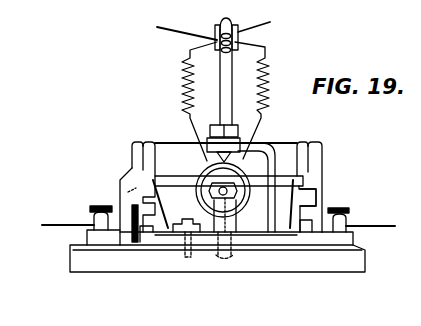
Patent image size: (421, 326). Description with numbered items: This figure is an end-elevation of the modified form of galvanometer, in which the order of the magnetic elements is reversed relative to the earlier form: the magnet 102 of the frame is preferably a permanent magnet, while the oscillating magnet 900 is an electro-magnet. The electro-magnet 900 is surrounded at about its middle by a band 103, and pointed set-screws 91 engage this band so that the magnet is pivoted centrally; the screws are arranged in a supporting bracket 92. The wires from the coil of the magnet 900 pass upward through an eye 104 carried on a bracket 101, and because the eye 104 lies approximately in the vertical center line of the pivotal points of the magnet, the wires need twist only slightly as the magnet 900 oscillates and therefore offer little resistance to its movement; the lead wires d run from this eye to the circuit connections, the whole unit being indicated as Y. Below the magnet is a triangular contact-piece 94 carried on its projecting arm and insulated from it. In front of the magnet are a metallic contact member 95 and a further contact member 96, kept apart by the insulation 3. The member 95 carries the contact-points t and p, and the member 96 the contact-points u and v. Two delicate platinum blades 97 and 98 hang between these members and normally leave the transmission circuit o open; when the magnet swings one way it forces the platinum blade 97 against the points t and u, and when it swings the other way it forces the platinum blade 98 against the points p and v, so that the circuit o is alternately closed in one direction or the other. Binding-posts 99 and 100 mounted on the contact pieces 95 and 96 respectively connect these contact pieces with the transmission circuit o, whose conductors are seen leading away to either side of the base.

The eye 104 is at (228, 19).
The bracket 101 is at (232, 91).
The pointed set-screws 91 is at (212, 129).
The band 103 is at (205, 169).
The electro-magnet 900 is at (238, 172).
The triangular contact-piece 94 is at (238, 218).
The supporting bracket 92 is at (268, 162).
The metallic contact member 95 is at (120, 184).
The contact member 96 is at (310, 241).
The platinum blade 97 is at (166, 204).
The platinum blade 98 is at (284, 204).
The binding-post 99 is at (93, 220).
The binding-post 100 is at (347, 221).
The permanent magnet 102 is at (316, 157).
The wires d is at (209, 23).
The unit Y is at (121, 84).
The transmission circuit o is at (213, 224).
The contact-point t is at (130, 193).
The contact-point u is at (147, 231).
The contact-point v is at (295, 231).
The contact-point p is at (308, 200).
The insulation 3 is at (132, 235).